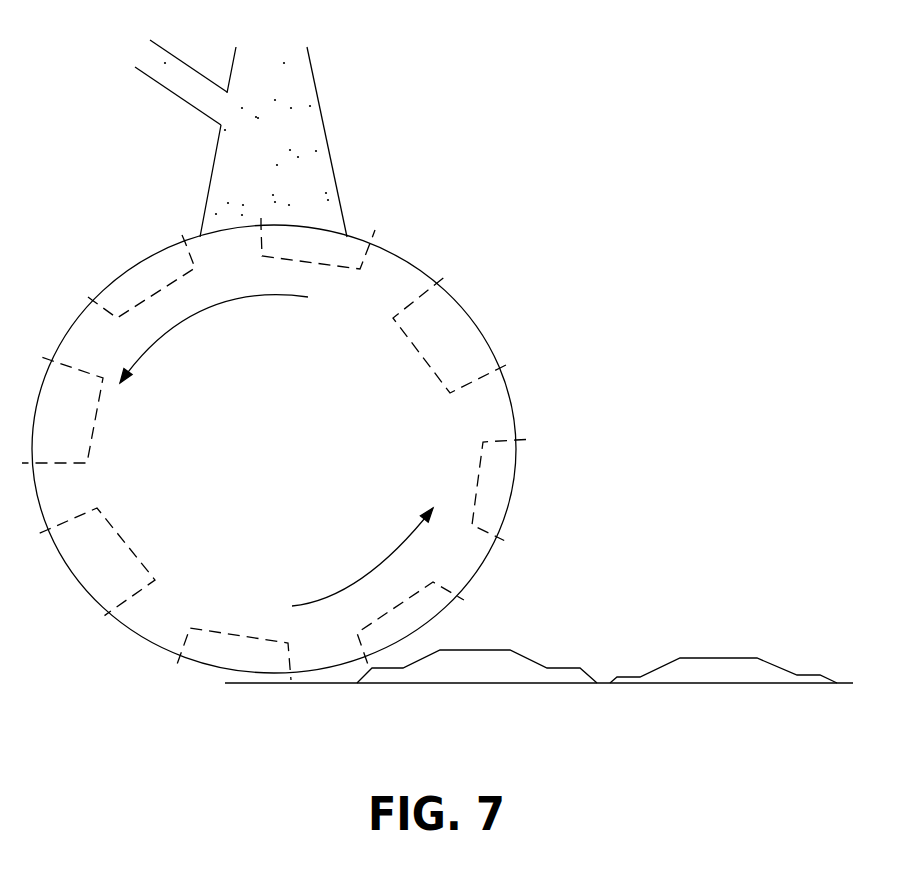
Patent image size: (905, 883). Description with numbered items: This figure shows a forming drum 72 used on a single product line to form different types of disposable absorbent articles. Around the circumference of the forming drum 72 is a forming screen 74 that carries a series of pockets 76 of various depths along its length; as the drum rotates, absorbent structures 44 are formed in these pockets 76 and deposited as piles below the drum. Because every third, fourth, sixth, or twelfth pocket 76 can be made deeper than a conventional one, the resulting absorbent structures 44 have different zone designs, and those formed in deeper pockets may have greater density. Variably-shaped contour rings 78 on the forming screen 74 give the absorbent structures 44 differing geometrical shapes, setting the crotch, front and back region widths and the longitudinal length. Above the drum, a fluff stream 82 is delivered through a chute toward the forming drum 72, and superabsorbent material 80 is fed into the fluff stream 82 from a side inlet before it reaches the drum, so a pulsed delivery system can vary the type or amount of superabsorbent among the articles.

The absorbent structure 44 is at (485, 650).
The forming drum 72 is at (310, 418).
The forming screen 74 is at (513, 402).
The pocket 76 is at (97, 420).
The contour ring 78 is at (437, 285).
The superabsorbent material 80 is at (183, 86).
The fluff stream 82 is at (290, 82).